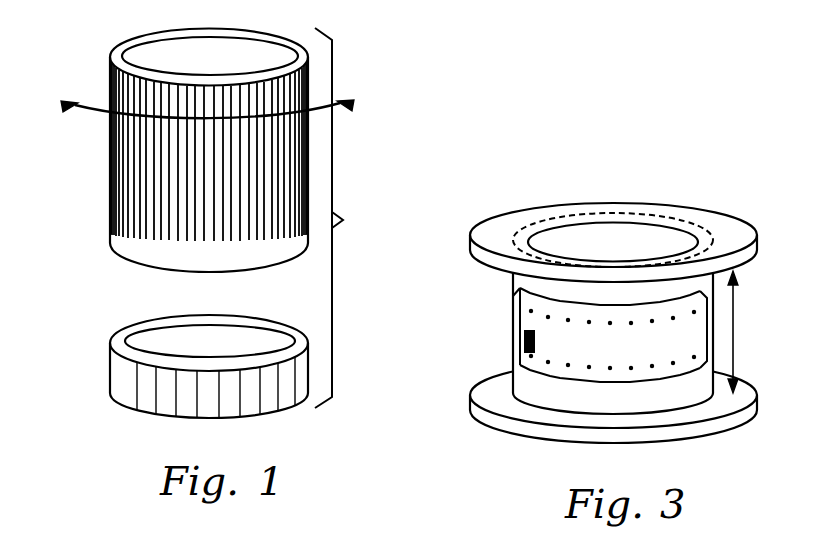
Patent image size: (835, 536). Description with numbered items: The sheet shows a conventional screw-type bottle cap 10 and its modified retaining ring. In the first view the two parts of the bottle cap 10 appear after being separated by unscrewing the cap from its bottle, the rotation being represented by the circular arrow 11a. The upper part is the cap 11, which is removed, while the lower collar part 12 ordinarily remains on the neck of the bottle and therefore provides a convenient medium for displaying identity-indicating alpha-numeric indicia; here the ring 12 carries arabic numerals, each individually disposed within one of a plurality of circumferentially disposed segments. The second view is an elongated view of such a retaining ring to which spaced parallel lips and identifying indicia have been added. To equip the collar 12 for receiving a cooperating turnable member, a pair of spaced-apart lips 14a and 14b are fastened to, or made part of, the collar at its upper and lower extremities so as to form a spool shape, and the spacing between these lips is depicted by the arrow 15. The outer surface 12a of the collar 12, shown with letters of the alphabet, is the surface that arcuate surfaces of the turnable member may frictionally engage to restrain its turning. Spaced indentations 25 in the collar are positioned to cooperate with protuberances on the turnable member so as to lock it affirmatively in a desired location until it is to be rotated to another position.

In FIG. 1, the screw-type bottle cap 10 is at (346, 218).
In FIG. 1, the cap 11 is at (110, 214).
In FIG. 1, the circular arrow 11a is at (390, 134).
In FIG. 1, the lower collar part 12 is at (110, 373).
In FIG. 3, the lower collar part 12 is at (514, 302).
In FIG. 3, the outer surface of collar 12a is at (514, 352).
In FIG. 3, the upper lip 14a is at (470, 257).
In FIG. 3, the lower lip 14b is at (498, 432).
In FIG. 3, the arrow depicting lip spacing 15 is at (735, 322).
In FIG. 3, the indentations 25 is at (616, 305).